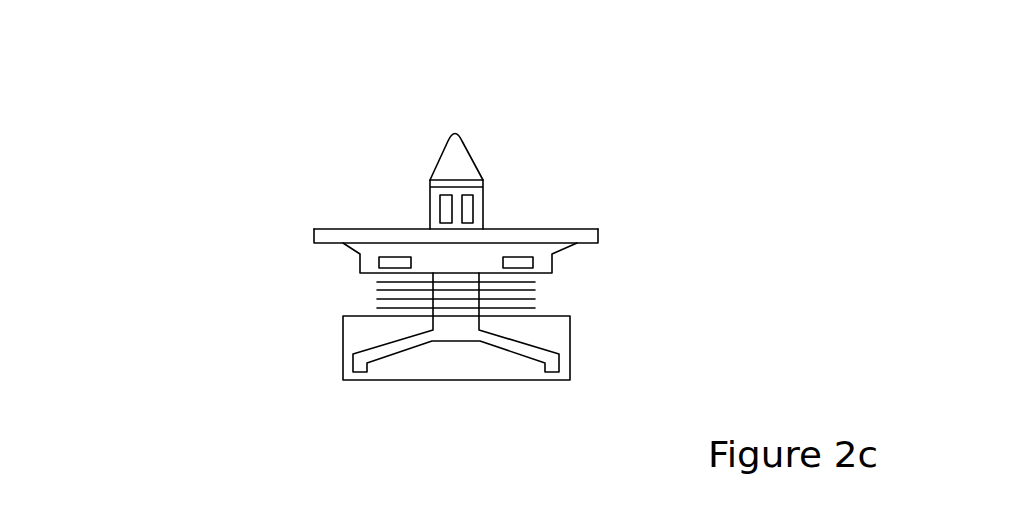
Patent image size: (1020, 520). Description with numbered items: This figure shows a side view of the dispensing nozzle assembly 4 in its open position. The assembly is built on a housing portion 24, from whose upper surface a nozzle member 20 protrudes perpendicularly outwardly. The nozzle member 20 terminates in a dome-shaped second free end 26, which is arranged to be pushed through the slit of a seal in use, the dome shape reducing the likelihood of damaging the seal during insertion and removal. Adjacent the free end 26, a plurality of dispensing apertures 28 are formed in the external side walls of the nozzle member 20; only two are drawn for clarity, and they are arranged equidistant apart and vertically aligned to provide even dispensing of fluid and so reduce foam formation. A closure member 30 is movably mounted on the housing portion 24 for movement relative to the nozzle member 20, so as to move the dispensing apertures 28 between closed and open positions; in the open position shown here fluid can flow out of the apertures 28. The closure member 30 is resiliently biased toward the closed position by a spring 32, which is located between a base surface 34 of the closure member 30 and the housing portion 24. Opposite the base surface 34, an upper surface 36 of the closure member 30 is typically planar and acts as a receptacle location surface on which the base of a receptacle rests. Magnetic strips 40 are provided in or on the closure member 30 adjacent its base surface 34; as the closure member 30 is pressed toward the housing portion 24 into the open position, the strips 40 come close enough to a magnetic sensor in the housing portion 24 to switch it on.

The dispensing nozzle assembly 4 is at (206, 260).
The nozzle member 20 is at (493, 162).
The housing portion 24 is at (570, 355).
The second free end 26 is at (448, 160).
The dispensing apertures 28 is at (447, 205).
The closure member 30 is at (616, 237).
The spring 32 is at (535, 290).
The base surface 34 is at (367, 275).
The upper surface 36 is at (590, 223).
The magnetic strips 40 is at (379, 262).